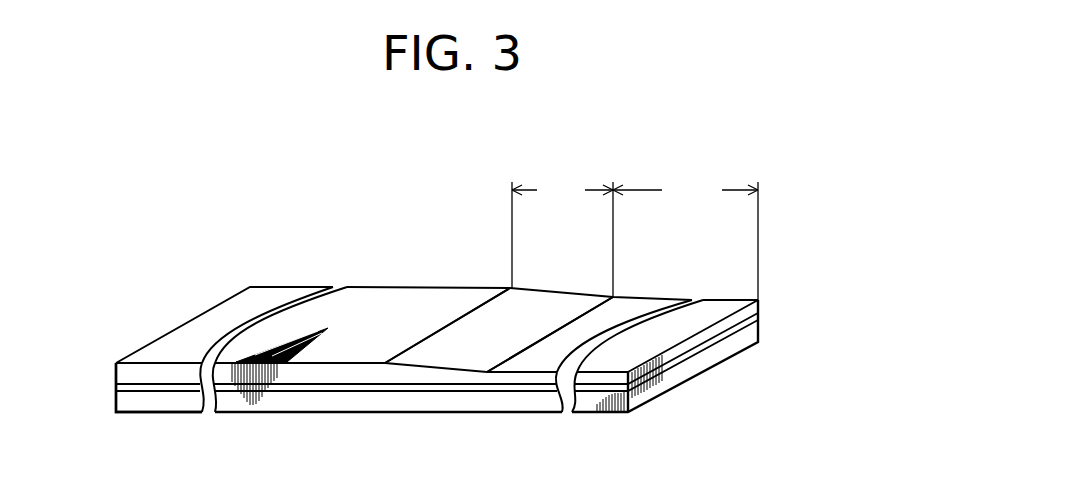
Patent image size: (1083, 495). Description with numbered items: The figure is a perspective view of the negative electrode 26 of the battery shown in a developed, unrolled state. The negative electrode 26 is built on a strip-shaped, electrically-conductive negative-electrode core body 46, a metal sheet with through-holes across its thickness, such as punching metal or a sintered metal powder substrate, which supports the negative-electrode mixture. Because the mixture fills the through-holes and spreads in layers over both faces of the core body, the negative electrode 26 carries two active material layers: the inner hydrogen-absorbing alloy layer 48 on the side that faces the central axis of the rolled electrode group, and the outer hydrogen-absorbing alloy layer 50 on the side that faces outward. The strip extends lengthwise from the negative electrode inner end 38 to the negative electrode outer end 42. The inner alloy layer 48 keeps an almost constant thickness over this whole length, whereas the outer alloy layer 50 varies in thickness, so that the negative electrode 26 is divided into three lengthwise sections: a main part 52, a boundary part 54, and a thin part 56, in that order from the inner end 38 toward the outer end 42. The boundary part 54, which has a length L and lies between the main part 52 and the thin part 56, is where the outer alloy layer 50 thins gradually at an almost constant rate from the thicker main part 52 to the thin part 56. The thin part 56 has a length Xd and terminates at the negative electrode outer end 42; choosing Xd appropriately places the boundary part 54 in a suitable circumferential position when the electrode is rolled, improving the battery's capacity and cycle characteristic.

The negative electrode 26 is at (478, 280).
The negative electrode inner end 38 is at (127, 398).
The negative electrode outer end 42 is at (620, 400).
The negative-electrode core body 46 is at (758, 318).
The inner hydrogen-absorbing alloy layer 48 is at (748, 343).
The outer hydrogen-absorbing alloy layer 50 is at (758, 302).
The main part 52 is at (277, 398).
The boundary part 54 is at (432, 400).
The thin part 56 is at (528, 400).